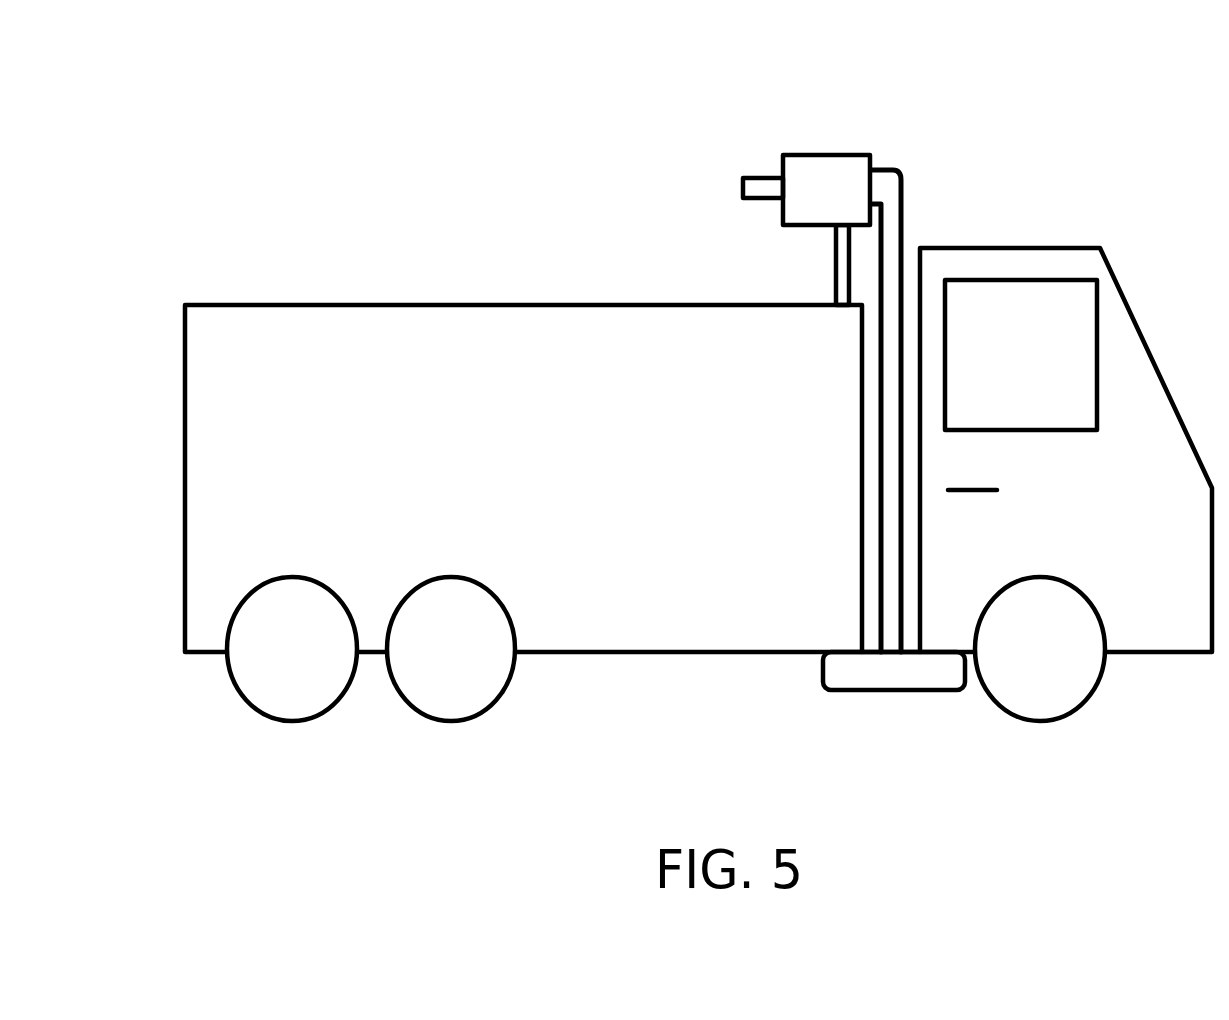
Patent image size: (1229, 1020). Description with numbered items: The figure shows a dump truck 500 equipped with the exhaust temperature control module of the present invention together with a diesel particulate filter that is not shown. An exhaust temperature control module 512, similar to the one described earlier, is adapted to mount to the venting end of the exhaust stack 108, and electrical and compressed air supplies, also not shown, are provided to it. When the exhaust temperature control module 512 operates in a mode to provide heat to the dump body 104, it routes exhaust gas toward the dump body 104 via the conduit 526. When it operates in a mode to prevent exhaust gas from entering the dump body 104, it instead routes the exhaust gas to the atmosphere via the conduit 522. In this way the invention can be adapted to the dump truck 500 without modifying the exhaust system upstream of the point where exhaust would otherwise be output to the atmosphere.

The dump truck 500 is at (368, 152).
The dump body 104 is at (185, 410).
The exhaust stack 108 is at (905, 187).
The exhaust temperature control module 512 is at (832, 160).
The conduit 522 is at (753, 192).
The conduit 526 is at (838, 292).